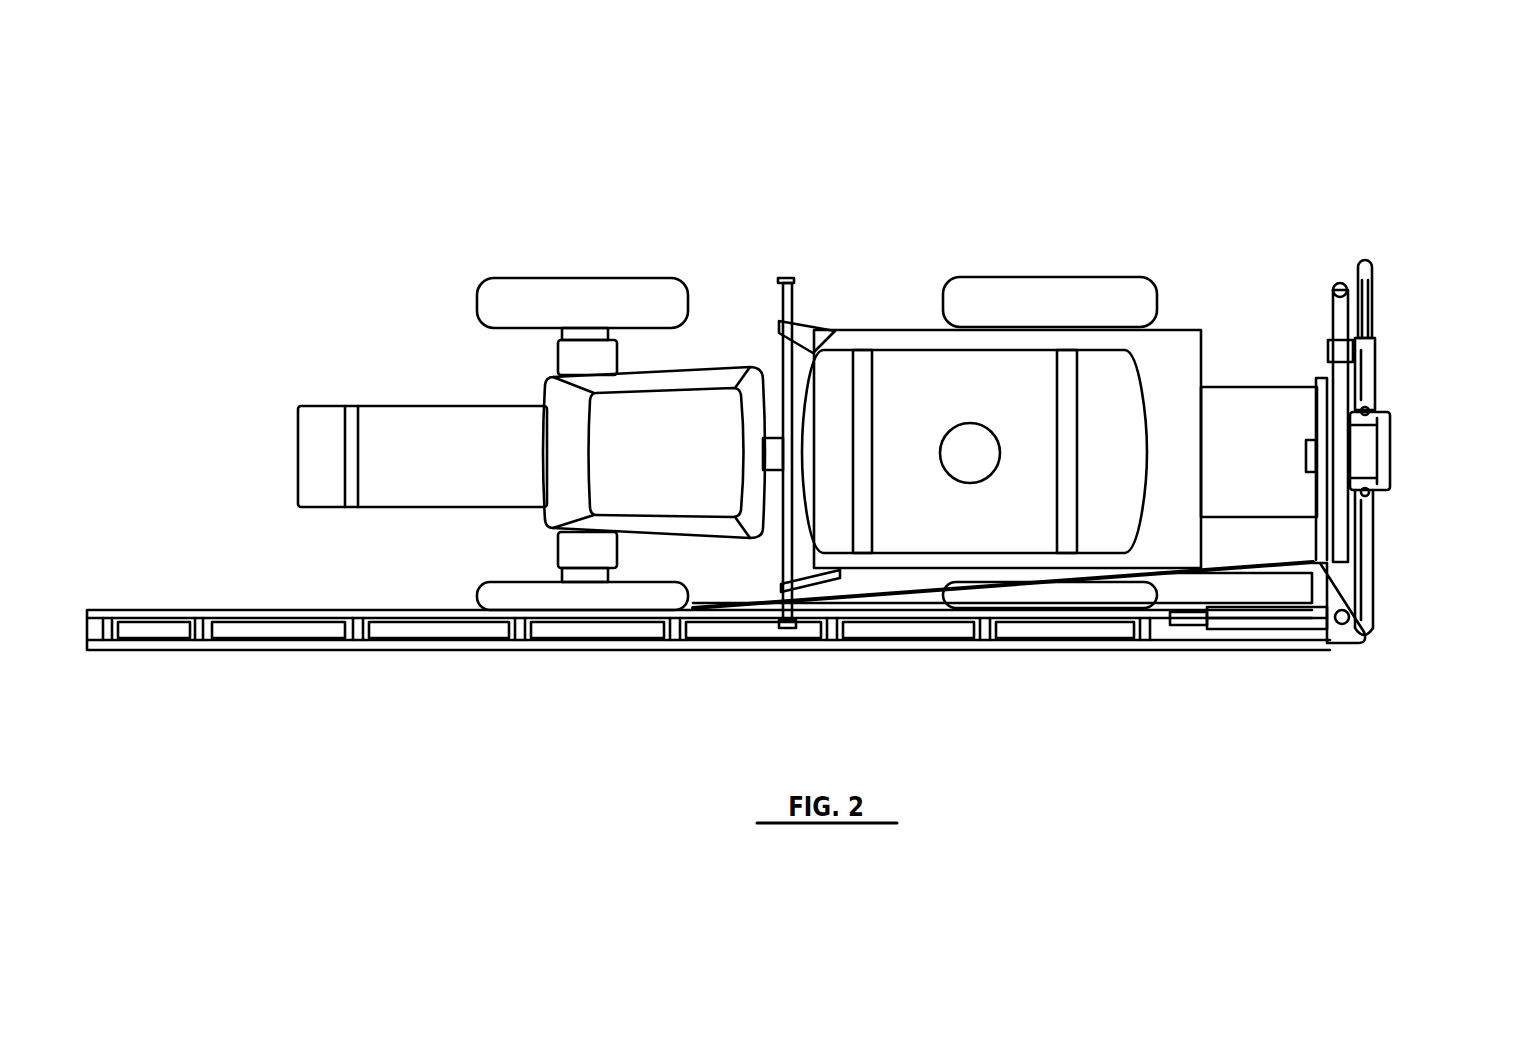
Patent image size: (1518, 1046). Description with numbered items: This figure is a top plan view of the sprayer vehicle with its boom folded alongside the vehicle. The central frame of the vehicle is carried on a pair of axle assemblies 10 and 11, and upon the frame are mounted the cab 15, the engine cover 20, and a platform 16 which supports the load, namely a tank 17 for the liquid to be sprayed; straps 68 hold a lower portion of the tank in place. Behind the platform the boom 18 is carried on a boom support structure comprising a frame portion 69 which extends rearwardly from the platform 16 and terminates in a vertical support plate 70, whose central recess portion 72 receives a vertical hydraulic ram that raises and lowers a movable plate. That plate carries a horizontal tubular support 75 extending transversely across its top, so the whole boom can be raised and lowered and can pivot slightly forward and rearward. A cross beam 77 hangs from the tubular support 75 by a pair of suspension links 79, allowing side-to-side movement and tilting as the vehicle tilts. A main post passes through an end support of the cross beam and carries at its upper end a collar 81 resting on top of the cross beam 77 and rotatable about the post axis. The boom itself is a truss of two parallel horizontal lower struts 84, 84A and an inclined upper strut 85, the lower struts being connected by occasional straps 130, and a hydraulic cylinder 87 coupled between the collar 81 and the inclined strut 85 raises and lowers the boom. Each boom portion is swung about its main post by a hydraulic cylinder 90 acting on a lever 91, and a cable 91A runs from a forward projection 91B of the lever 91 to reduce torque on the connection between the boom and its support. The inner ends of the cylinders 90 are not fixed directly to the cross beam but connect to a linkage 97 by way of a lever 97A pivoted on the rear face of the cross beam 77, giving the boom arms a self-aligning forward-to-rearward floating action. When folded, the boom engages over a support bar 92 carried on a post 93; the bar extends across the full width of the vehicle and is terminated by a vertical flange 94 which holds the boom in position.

The axle assembly 10 is at (592, 265).
The axle assembly 11 is at (1035, 265).
The cab 15 is at (672, 413).
The platform 16 is at (1165, 352).
The tank 17 is at (912, 387).
The boom 18 is at (1313, 660).
The engine cover 20 is at (400, 427).
The straps 68 is at (1063, 393).
The frame portion 69 is at (1240, 411).
The vertical support plate 70 is at (1300, 463).
The central recess portion 72 is at (1308, 451).
The horizontal tubular support 75 is at (1333, 323).
The cross beam 77 is at (1333, 298).
The suspension links 79 is at (1328, 357).
The collar 81 is at (1340, 278).
The horizontal lower strut 84 is at (239, 610).
The horizontal lower strut 84A is at (397, 650).
The inclined upper strut 85 is at (379, 610).
The hydraulic cylinder 87 is at (1267, 630).
The hydraulic cylinder 90 is at (1378, 360).
The lever 91 is at (1343, 640).
The cable 91A is at (1302, 565).
The forward projection 91B is at (1314, 585).
The support bar 92 is at (779, 303).
The post 93 is at (821, 326).
The vertical flange 94 is at (782, 278).
The linkage 97 is at (1396, 454).
The lever 97A is at (1389, 410).
The straps 130 is at (346, 640).